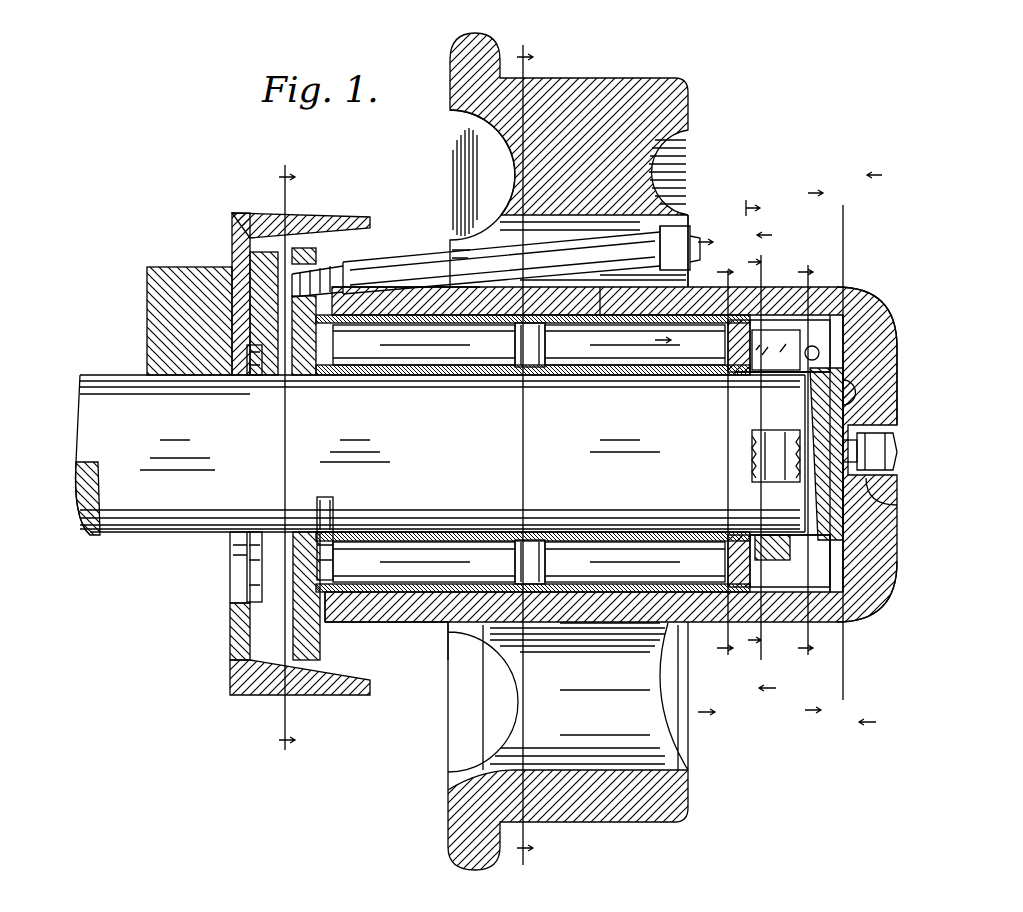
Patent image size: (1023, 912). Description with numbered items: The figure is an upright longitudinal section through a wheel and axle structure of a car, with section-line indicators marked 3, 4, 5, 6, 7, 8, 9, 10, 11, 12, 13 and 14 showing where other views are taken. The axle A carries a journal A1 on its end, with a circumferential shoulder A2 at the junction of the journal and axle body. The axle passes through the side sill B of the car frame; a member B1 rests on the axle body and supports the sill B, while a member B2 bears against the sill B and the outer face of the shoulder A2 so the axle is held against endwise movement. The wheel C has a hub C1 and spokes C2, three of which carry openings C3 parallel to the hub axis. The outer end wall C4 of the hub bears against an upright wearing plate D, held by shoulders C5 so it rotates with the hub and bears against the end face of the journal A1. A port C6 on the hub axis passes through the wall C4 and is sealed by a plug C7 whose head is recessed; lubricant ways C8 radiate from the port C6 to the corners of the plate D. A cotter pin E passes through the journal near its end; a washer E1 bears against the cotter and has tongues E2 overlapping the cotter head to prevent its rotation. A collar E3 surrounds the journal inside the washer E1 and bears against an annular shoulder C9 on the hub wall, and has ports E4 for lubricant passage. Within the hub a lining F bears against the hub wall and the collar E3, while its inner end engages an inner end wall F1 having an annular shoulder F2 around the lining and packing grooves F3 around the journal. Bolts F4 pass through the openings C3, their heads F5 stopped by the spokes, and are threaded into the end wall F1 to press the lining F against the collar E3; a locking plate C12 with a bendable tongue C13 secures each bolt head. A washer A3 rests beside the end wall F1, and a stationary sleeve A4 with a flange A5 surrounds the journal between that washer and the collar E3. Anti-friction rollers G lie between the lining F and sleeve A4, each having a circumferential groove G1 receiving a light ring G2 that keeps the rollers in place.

The axle A is at (95, 432).
The journal A1 is at (262, 548).
The circumferential shoulder A2 is at (250, 522).
The washer A3 is at (318, 375).
The sleeve A4 is at (518, 342).
The flange A5 is at (370, 372).
The side sill B is at (232, 224).
The member B1 is at (150, 330).
The member B2 is at (258, 255).
The wheel C is at (655, 120).
The hub C1 is at (440, 625).
The spokes C2 is at (540, 188).
The openings C3 is at (482, 233).
The outer end wall C4 is at (890, 352).
The shoulders C5 is at (860, 330).
The port C6 is at (895, 478).
The plug C7 is at (892, 448).
The lubricant ways C8 is at (856, 440).
The annular shoulder C9 is at (830, 290).
The locking plate C12 is at (620, 300).
The tongue C13 is at (700, 230).
The wearing plate D is at (835, 500).
The cotter pin E is at (865, 600).
The washer E1 is at (850, 580).
The tongues E2 is at (870, 300).
The collar E3 is at (830, 390).
The ports E4 is at (617, 640).
The hub lining F is at (335, 600).
The inner end wall F1 is at (300, 600).
The annular shoulder F2 is at (240, 665).
The packing grooves F3 is at (300, 560).
The bolts F4 is at (385, 262).
The bolt head F5 is at (672, 248).
The anti-friction rollers G is at (735, 345).
The circumferential grooves G1 is at (550, 388).
The ring G2 is at (458, 640).
The section line 3- 3 is at (285, 469).
The section line 4- 4 is at (523, 451).
The section line 5 is at (640, 182).
The section line 6 is at (687, 218).
The section line 7- 7 is at (758, 461).
The section line 8 is at (760, 462).
The ball detent 9 is at (715, 325).
The section line 10- 10 is at (722, 465).
The section line 11 is at (704, 742).
The section line 12- 12 is at (802, 462).
The section line 13- 13 is at (828, 453).
The section line 14 is at (852, 453).